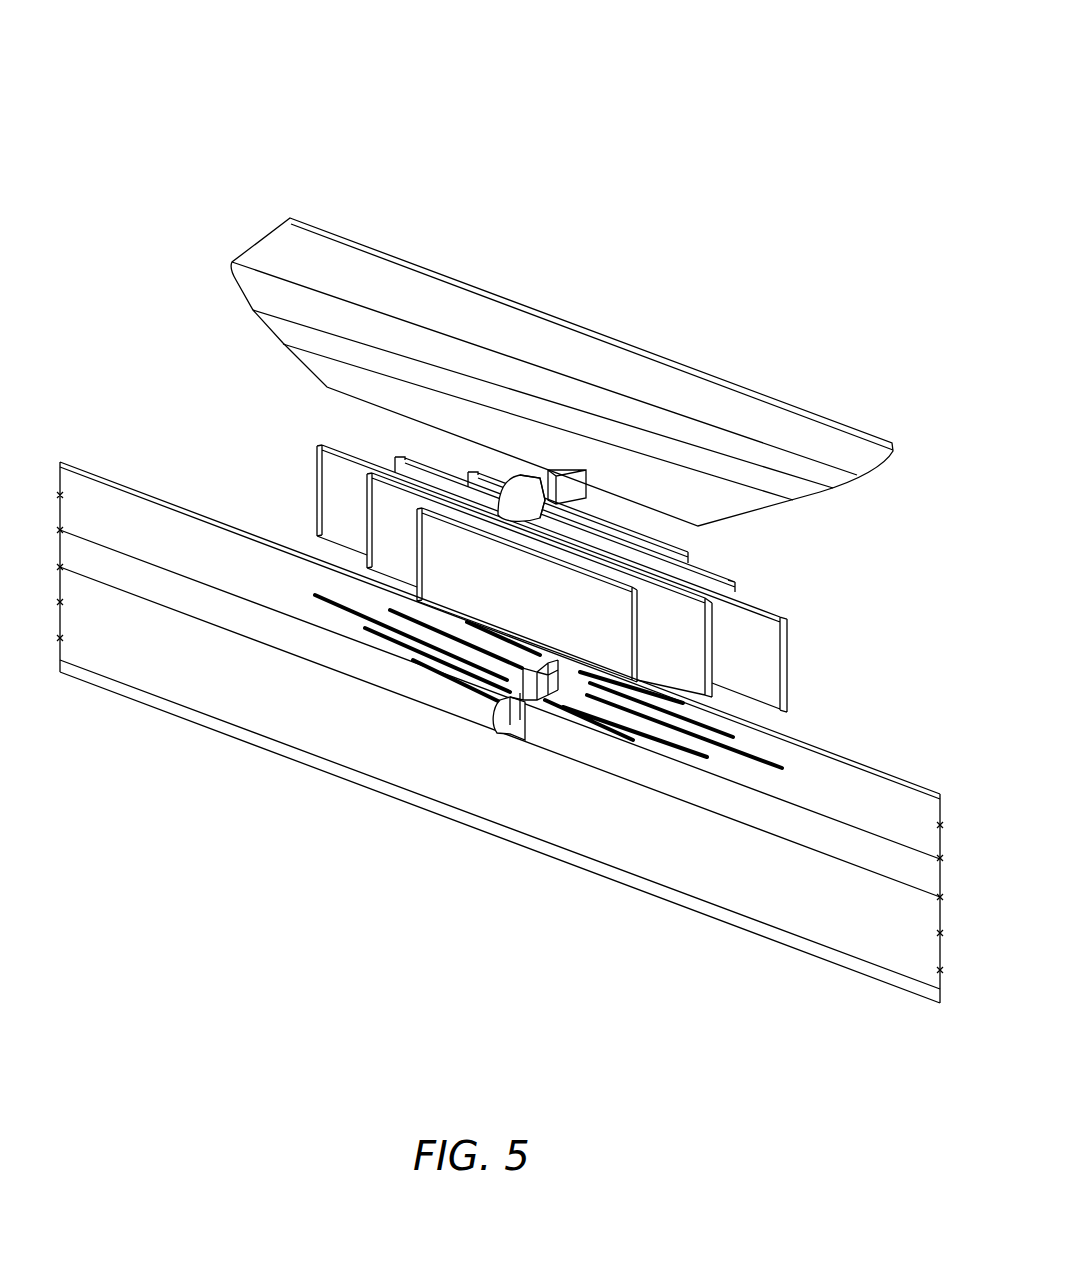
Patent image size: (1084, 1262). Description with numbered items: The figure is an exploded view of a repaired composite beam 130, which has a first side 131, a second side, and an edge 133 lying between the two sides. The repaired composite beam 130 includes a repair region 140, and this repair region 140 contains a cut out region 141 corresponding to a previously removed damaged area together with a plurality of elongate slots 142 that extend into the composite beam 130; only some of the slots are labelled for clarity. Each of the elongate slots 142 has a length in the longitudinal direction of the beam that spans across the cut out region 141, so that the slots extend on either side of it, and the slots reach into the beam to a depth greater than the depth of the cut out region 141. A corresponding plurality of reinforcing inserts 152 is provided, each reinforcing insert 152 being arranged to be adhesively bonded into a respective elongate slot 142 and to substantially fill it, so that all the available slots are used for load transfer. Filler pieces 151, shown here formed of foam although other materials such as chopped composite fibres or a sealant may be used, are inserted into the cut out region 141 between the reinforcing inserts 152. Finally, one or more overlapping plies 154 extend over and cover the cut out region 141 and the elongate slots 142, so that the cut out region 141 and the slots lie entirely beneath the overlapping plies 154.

The repaired composite beam 130 is at (201, 537).
The first side 131 is at (172, 662).
The edge 133 is at (255, 572).
The repair region 140 is at (278, 140).
The cut out region 141 is at (495, 746).
The elongate slots 142 is at (598, 727).
The filler pieces 151 is at (525, 497).
The reinforcing inserts 152 is at (330, 465).
The overlapping plies 154 is at (563, 340).